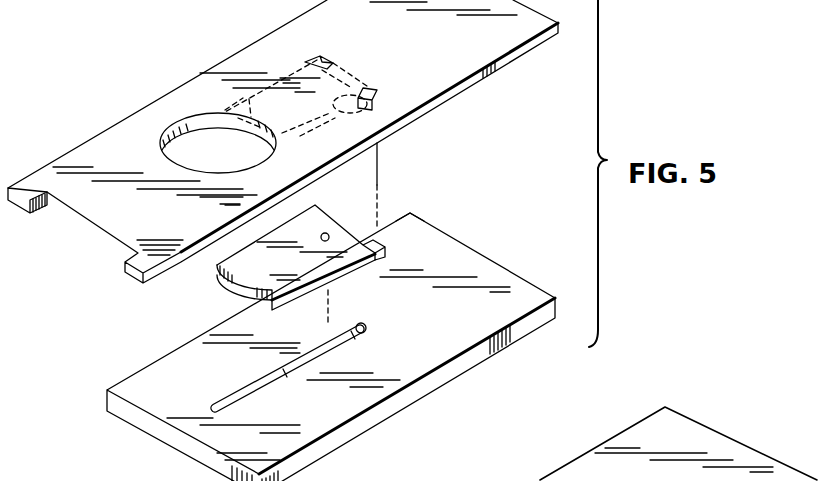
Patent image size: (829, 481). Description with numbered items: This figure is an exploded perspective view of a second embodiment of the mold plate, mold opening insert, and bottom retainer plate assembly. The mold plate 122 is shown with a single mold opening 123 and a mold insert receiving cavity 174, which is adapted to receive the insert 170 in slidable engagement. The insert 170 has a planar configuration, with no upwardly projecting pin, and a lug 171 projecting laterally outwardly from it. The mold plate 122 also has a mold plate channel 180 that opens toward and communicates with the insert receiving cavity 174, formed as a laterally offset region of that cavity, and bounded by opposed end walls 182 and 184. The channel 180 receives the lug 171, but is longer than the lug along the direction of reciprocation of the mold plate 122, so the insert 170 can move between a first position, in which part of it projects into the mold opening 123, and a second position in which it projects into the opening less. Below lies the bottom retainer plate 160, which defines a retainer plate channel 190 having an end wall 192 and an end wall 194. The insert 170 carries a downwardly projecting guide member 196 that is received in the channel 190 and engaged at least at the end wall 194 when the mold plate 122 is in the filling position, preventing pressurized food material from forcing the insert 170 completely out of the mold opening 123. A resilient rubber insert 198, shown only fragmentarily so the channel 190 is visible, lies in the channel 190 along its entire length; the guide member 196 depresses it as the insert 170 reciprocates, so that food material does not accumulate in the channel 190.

The mold plate 122 is at (488, 52).
The mold opening 123 is at (187, 118).
The mold insert receiving cavity 174 is at (232, 129).
The insert 170 is at (340, 54).
The mold plate channel 180 is at (370, 82).
The end wall 184 is at (388, 100).
The end wall 182 is at (380, 126).
The guide member 196 is at (330, 232).
The bottom retainer plate 160 is at (430, 387).
The lug 171 is at (413, 214).
The retainer plate channel 190 is at (247, 400).
The end wall 192 is at (218, 406).
The resilient rubber insert 198 is at (343, 352).
The end wall 194 is at (360, 328).